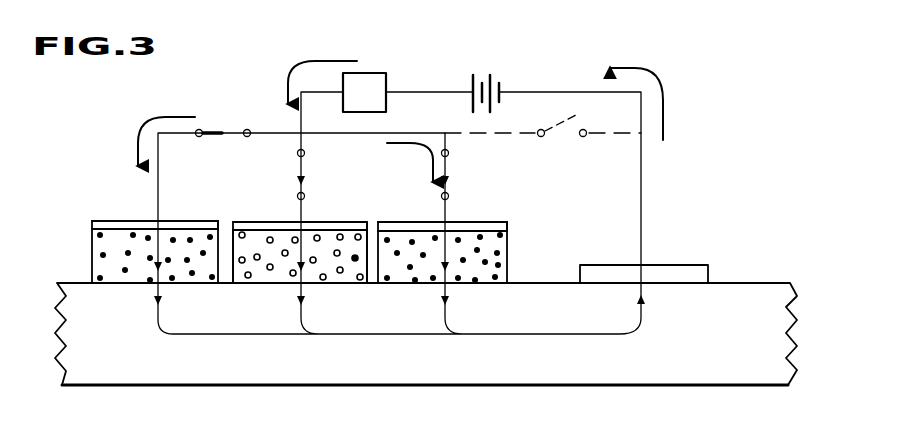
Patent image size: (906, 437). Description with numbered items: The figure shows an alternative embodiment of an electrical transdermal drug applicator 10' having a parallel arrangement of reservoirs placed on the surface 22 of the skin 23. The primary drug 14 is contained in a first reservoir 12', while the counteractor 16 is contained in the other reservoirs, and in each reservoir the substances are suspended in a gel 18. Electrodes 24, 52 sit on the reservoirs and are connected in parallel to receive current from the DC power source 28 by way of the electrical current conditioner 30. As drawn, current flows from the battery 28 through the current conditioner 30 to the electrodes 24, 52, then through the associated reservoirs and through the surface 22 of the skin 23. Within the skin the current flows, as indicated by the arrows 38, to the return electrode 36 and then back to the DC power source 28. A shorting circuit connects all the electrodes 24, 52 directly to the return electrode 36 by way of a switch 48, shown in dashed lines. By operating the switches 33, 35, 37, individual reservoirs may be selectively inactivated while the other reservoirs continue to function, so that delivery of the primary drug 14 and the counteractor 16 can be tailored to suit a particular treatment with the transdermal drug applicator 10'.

The electrical transdermal drug applicator 10' is at (750, 132).
The first reservoir 12' is at (300, 274).
The primary drug 14 is at (316, 238).
The counteractor 16 is at (117, 242).
The gel 18 is at (100, 270).
The surface of the skin 22 is at (745, 283).
The skin 23 is at (763, 362).
The electrode 24 is at (278, 223).
The DC power source 28 is at (495, 77).
The electrical current conditioner 30 is at (365, 82).
The switch 33 is at (222, 132).
The switch 35 is at (305, 170).
The return electrode 36 is at (658, 272).
The switch 37 is at (447, 170).
The arrows 38 is at (473, 334).
The switch 48 is at (570, 124).
The electrode 52 is at (190, 225).